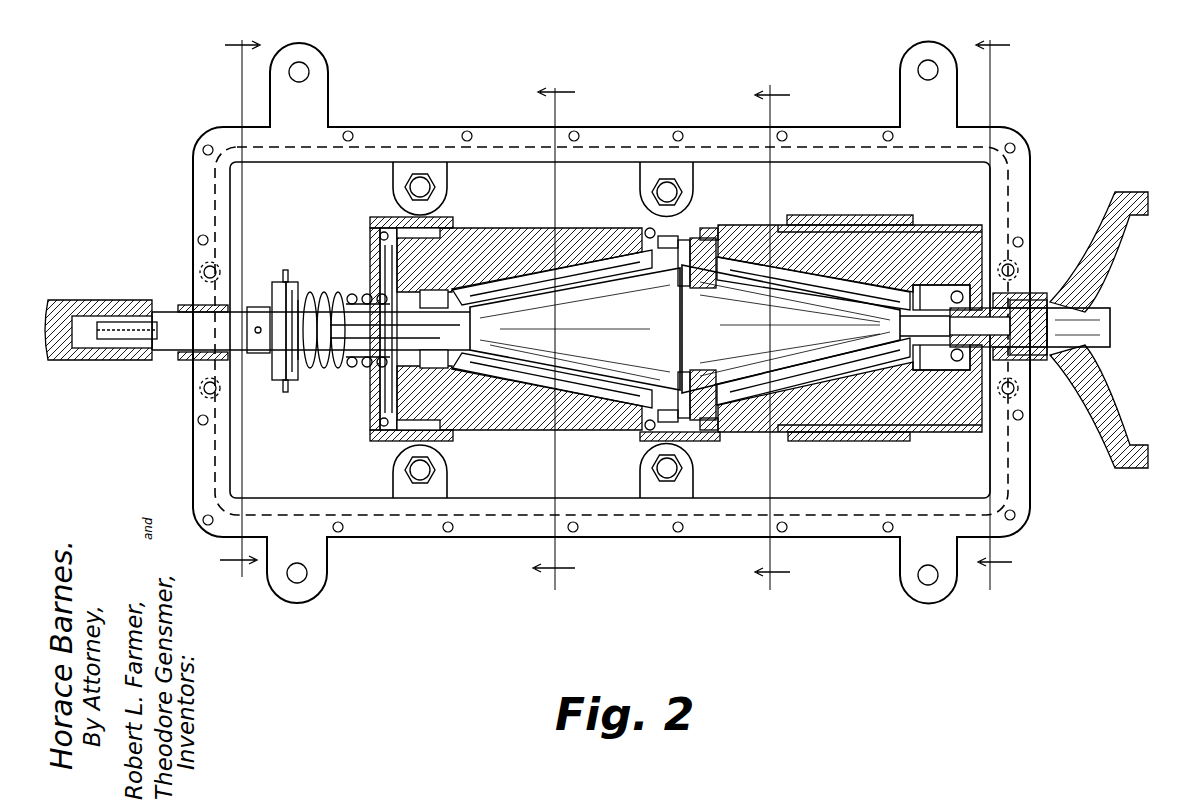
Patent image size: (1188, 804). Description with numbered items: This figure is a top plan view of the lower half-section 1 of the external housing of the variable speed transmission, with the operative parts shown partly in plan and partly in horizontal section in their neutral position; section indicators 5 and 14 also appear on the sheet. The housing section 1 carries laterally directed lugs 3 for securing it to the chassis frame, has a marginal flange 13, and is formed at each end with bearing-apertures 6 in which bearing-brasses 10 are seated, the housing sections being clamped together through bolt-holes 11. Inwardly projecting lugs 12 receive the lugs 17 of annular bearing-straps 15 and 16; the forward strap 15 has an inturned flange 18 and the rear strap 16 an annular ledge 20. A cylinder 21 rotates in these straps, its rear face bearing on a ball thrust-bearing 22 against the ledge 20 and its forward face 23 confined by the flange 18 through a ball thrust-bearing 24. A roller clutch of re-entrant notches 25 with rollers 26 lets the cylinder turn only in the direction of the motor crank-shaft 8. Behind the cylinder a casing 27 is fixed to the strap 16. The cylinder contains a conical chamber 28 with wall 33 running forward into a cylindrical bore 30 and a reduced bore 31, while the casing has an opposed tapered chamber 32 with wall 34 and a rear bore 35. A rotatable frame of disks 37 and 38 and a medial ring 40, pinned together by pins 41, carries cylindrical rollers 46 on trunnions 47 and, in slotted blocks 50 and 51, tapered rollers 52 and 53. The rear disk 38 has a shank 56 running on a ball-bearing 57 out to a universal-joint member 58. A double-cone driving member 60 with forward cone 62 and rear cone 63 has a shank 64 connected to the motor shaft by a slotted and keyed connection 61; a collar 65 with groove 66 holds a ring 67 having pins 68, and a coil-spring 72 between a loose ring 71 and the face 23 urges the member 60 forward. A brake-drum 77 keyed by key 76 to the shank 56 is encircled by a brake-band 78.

The lower half-section of the external housing 1 is at (245, 448).
The laterally directed lugs 3 is at (905, 88).
The section line 5 is at (995, 306).
The bearing-apertures 6 is at (1040, 272).
The motor crank-shaft 8 is at (60, 312).
The bearing-brasses 10 is at (192, 300).
The bolt-holes 11 is at (204, 270).
The projecting lugs 12 is at (706, 480).
The marginal flange 13 is at (818, 130).
The section line 14 is at (772, 331).
The forward bearing-strap 15 is at (440, 222).
The rear bearing-strap 16 is at (645, 231).
The strap lugs 17 is at (405, 205).
The inturned marginal flange 18 is at (372, 232).
The annular ledge 20 is at (640, 235).
The cylinder 21 is at (530, 430).
The ball thrust-bearing 22 is at (656, 246).
The forward face of the cylinder 23 is at (384, 402).
The ball thrust-bearing 24 is at (380, 421).
The re-entrant angular notches 25 is at (445, 433).
The clutch roller 26 is at (445, 232).
The cylindrical casing 27 is at (828, 240).
The conical chamber 28 is at (515, 240).
The cylindrical bore 30 is at (420, 296).
The reduced bore 31 is at (345, 297).
The tapered chamber 32 is at (855, 285).
The diverging wall of chamber 28 33 is at (590, 402).
The diverging wall of chamber 32 34 is at (800, 225).
The bore 35 is at (950, 288).
The forward circular disk 37 is at (458, 324).
The rear circular disk 38 is at (900, 325).
The medial ring 40 is at (704, 270).
The pins 41 is at (712, 240).
The cylindrical steel rollers 46 is at (515, 345).
The trunnions 47 is at (670, 252).
The slotted block 50 is at (700, 436).
The slotted block 51 is at (945, 402).
The inner tapered roller 52 is at (798, 330).
The outer tapered roller 53 is at (830, 340).
The rear shank 56 is at (1110, 325).
The ball-bearing 57 is at (990, 358).
The universal-joint member 58 is at (1105, 287).
The double-cone driving member 60 is at (771, 329).
The slotted and keyed connection 61 is at (120, 322).
The forward cone portion 62 is at (562, 405).
The rear cone portion 63 is at (835, 402).
The shank 64 is at (340, 366).
The collar 65 is at (262, 355).
The annular groove 66 is at (283, 282).
The ring 67 is at (292, 282).
The pins 68 is at (288, 270).
The loose ring 71 is at (298, 382).
The coil-spring 72 is at (360, 366).
The key 76 is at (1040, 302).
The brake-drum 77 is at (905, 235).
The brake-band 78 is at (890, 222).